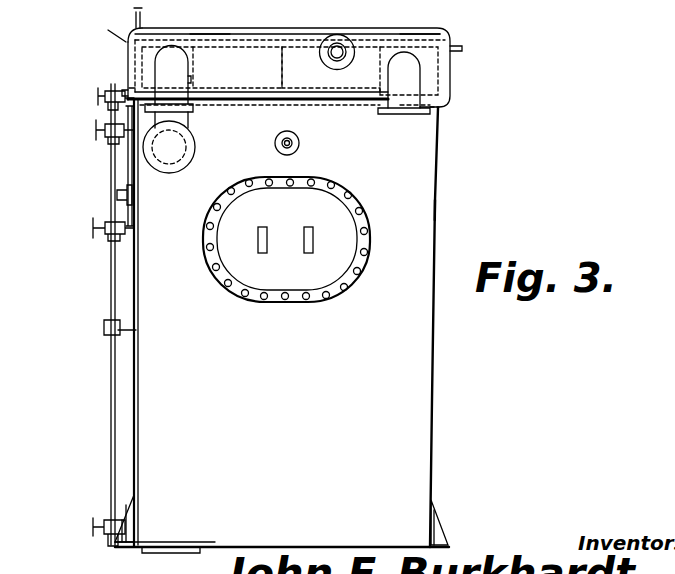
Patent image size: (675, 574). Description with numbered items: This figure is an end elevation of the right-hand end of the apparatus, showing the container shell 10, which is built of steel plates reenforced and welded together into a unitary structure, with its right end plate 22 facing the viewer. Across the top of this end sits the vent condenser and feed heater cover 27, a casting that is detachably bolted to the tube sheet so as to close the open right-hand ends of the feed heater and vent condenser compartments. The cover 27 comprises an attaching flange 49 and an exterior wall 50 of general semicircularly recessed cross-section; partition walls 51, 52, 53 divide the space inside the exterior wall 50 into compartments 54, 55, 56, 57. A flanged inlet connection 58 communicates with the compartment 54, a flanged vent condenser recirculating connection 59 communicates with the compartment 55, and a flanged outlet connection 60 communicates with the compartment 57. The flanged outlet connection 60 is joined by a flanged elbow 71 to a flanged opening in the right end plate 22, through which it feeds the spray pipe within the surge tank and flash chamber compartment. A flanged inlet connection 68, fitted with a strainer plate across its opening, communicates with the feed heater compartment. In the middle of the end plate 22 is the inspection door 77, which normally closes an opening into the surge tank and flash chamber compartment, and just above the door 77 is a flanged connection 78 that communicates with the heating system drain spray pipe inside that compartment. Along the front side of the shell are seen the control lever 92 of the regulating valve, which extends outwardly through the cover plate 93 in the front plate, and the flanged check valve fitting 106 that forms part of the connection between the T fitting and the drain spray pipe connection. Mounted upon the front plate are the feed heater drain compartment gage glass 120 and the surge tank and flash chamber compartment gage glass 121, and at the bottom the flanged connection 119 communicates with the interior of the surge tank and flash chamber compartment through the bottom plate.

The container shell 10 is at (432, 421).
The right end plate 22 is at (456, 210).
The vent condenser and feed heater cover 27 is at (252, 55).
The attaching flange 49 is at (296, 97).
The exterior wall 50 is at (357, 86).
The partition wall 51 is at (376, 60).
The partition wall 52 is at (212, 67).
The partition wall 53 is at (208, 36).
The compartment 54 is at (420, 52).
The compartment 55 is at (333, 82).
The compartment 56 is at (238, 95).
The compartment 57 is at (126, 68).
The flanged inlet connection 58 is at (406, 84).
The flanged vent condenser recirculating connection 59 is at (339, 46).
The flanged outlet connection 60 is at (160, 58).
The flanged inlet connection 68 is at (142, 14).
The flanged elbow 71 is at (178, 147).
The inspection door 77 is at (290, 278).
The flanged connection 78 is at (292, 147).
The control lever 92 is at (114, 187).
The cover plate 93 is at (130, 158).
The flanged check valve fitting 106 is at (77, 21).
The flanged connection 119 is at (166, 546).
The feed heater drain compartment gage glass 120 is at (112, 115).
The surge tank and flash chamber compartment gage glass 121 is at (110, 288).